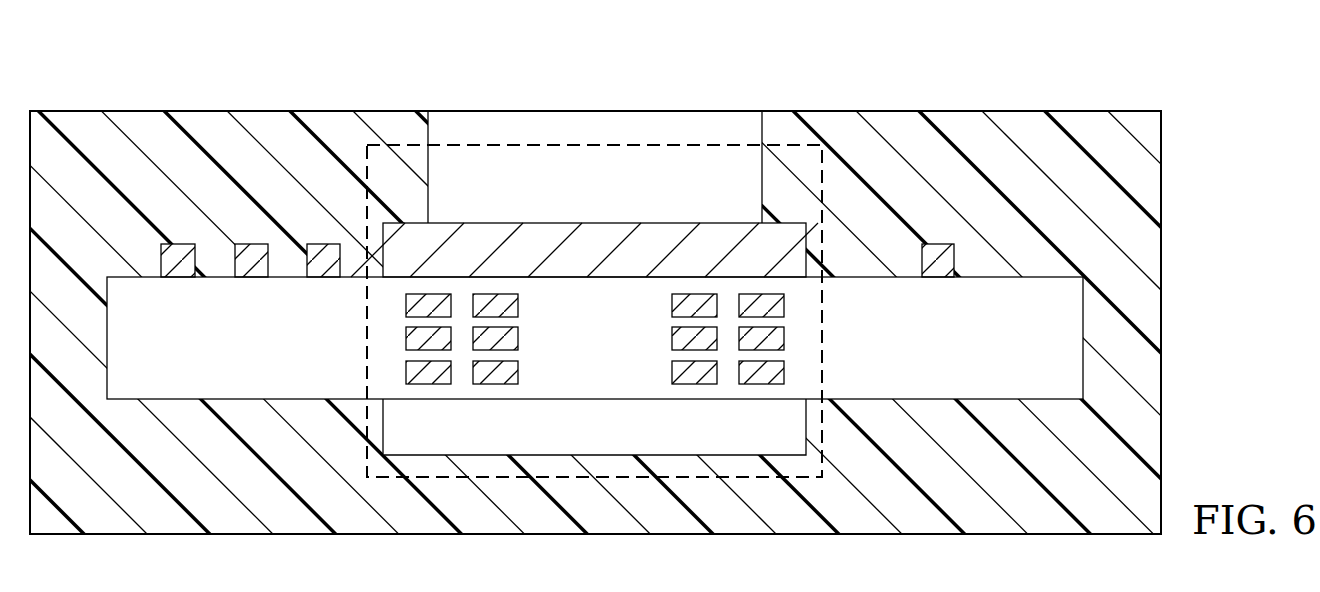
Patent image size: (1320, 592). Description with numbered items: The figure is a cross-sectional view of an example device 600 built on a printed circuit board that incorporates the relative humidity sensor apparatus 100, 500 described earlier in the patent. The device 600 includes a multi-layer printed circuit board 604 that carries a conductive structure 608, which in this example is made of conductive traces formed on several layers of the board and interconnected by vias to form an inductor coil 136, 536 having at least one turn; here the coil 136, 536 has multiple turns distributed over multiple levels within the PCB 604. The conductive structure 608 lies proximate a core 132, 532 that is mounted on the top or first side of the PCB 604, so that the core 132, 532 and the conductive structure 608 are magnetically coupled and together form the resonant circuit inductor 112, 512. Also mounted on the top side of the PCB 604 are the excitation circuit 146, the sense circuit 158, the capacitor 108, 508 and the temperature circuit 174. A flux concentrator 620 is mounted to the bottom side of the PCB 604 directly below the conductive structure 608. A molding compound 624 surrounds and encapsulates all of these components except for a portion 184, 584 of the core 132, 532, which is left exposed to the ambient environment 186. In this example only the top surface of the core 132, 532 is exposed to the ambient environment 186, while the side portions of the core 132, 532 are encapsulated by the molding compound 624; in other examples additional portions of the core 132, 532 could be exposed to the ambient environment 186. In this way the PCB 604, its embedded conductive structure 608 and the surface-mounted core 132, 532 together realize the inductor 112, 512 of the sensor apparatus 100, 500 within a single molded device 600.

The device 600 is at (660, 296).
The relative humidity sensor apparatus 100 is at (660, 296).
The relative humidity sensor apparatus 500 is at (660, 296).
The molding compound 624 is at (968, 120).
The ambient environment 186 is at (617, 49).
The resonant circuit inductor 112 is at (586, 277).
The resonant circuit inductor 512 is at (586, 277).
The exposed portion of the core 184 is at (584, 217).
The exposed portion of the core 584 is at (584, 217).
The core 132 is at (584, 219).
The core 532 is at (662, 232).
The flux concentrator 620 is at (617, 437).
The multi-layer printed circuit board 604 is at (595, 338).
The conductive structure 608 is at (594, 338).
The inductor coil 136 is at (787, 338).
The inductor coil 536 is at (792, 288).
The sense circuit 158 is at (178, 272).
The excitation circuit 146 is at (248, 272).
The capacitor 108 is at (314, 291).
The capacitor 508 is at (322, 272).
The temperature circuit 174 is at (940, 272).